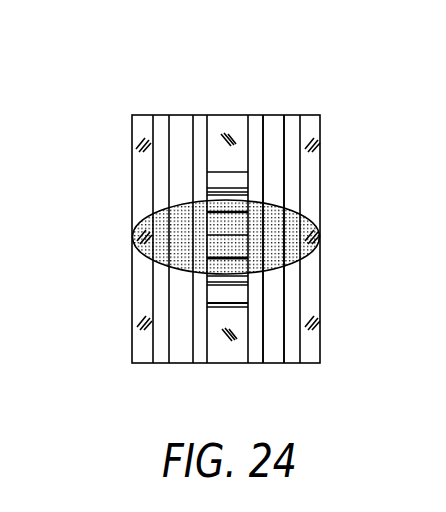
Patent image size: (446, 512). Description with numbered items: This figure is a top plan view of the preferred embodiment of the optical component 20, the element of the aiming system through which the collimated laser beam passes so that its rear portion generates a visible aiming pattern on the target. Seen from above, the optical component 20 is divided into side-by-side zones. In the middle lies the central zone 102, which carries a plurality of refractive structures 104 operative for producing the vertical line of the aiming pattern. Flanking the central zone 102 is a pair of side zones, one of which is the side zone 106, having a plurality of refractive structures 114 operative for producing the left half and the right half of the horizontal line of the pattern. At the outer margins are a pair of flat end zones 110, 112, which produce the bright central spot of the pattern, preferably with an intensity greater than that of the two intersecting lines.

The optical component 20 is at (117, 228).
The central zone 102 is at (228, 115).
The refractive structures 104 is at (208, 283).
The side zone 106 is at (278, 115).
The flat end zone 110 is at (312, 167).
The flat end zone 112 is at (140, 128).
The refractive structures 114 is at (175, 122).